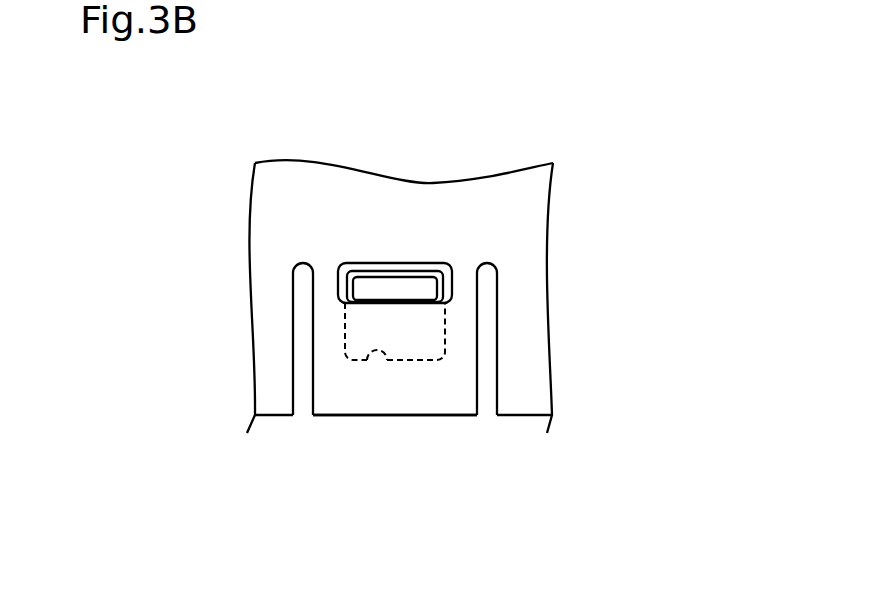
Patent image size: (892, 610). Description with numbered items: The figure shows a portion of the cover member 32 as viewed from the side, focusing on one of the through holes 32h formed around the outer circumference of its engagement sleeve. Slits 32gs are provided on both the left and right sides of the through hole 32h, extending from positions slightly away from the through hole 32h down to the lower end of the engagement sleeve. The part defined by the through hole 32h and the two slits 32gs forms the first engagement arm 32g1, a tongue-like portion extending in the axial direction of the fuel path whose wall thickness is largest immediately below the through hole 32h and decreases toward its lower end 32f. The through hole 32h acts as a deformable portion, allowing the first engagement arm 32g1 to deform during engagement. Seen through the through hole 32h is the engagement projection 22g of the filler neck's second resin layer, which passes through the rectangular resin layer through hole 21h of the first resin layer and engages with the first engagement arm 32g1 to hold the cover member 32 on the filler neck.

The cover member 32 is at (438, 198).
The slits 32gs is at (303, 405).
The lower end 32f is at (425, 403).
The through hole 32h is at (442, 265).
The engagement projection 22g is at (377, 290).
The first engagement arm 32g1 is at (415, 338).
The resin layer through hole 21h is at (365, 358).